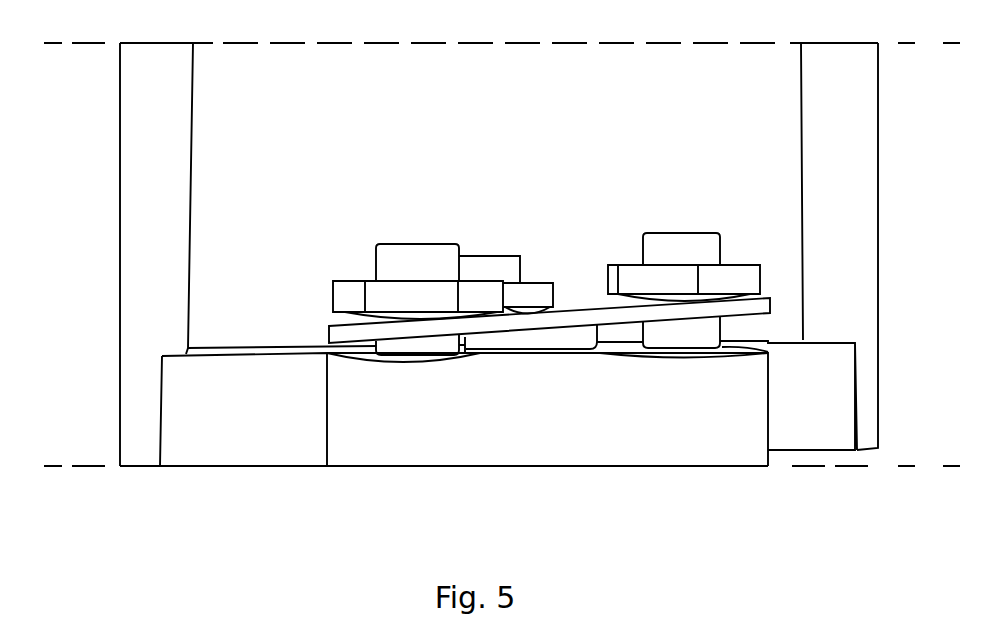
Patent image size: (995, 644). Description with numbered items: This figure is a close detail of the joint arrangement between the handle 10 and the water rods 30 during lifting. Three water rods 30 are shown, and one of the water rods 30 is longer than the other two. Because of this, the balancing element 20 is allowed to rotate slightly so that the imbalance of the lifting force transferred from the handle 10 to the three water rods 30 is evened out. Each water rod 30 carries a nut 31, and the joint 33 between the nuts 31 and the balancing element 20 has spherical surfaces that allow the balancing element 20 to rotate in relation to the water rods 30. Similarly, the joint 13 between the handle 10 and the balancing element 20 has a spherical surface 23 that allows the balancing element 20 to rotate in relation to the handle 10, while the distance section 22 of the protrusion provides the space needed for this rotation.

The handle 10 is at (857, 292).
The joint 13 is at (546, 352).
The balancing element 20 is at (328, 333).
The distance section 22 is at (488, 340).
The spherical surface 23 is at (528, 348).
The water rods 30 is at (643, 238).
The nuts 31 is at (401, 306).
The joint 33 is at (378, 326).